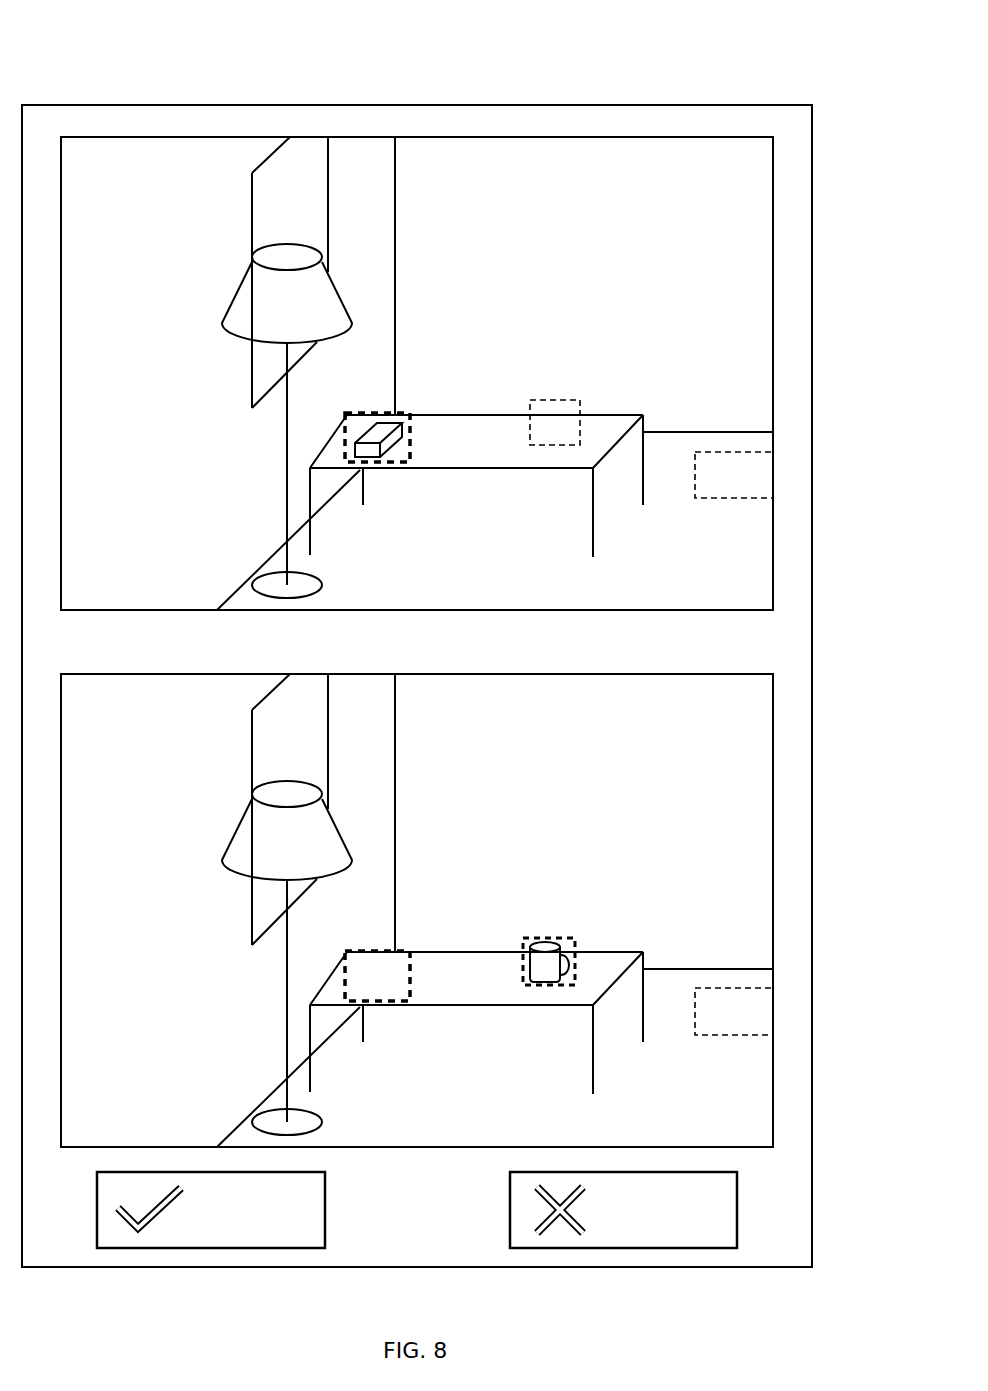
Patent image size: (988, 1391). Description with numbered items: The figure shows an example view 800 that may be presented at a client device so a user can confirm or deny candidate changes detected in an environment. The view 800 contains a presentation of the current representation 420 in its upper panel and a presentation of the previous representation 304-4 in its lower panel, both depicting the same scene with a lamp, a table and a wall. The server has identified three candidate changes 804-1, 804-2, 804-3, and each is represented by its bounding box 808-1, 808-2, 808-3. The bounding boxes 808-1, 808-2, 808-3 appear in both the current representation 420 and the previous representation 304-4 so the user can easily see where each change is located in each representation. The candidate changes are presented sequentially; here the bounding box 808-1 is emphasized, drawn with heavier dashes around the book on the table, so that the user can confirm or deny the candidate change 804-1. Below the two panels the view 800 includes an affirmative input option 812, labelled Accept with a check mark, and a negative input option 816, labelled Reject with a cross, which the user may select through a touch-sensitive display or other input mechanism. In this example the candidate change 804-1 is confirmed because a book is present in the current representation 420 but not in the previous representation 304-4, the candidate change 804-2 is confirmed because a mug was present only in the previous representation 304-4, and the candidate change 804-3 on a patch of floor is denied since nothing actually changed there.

The view 800 is at (150, 100).
The current representation 420 is at (532, 135).
The previous representation 304-4 is at (775, 805).
The bounding box 808-1 is at (407, 413).
The bounding box 808-2 is at (570, 400).
The bounding box 808-3 is at (727, 452).
The candidate change 804-1 is at (391, 460).
The candidate change 804-2 is at (550, 446).
The candidate change 804-3 is at (712, 499).
The affirmative input option 812 is at (170, 1248).
The negative input option 816 is at (623, 1248).